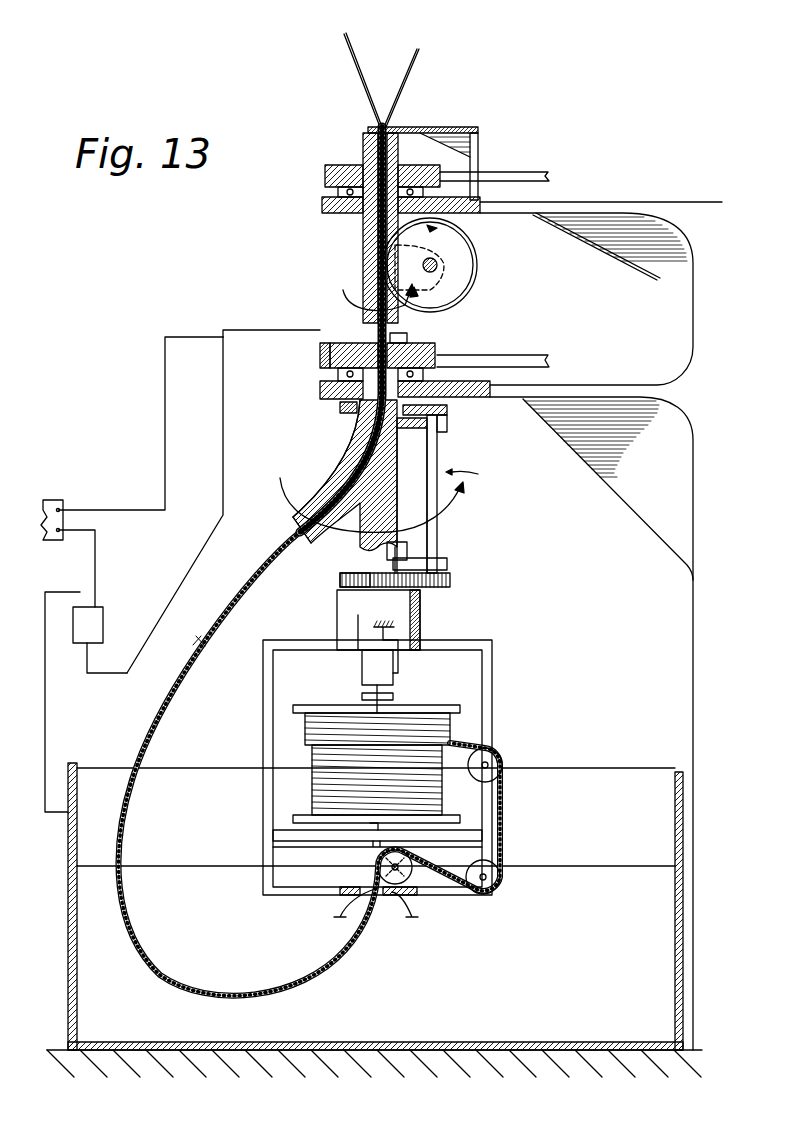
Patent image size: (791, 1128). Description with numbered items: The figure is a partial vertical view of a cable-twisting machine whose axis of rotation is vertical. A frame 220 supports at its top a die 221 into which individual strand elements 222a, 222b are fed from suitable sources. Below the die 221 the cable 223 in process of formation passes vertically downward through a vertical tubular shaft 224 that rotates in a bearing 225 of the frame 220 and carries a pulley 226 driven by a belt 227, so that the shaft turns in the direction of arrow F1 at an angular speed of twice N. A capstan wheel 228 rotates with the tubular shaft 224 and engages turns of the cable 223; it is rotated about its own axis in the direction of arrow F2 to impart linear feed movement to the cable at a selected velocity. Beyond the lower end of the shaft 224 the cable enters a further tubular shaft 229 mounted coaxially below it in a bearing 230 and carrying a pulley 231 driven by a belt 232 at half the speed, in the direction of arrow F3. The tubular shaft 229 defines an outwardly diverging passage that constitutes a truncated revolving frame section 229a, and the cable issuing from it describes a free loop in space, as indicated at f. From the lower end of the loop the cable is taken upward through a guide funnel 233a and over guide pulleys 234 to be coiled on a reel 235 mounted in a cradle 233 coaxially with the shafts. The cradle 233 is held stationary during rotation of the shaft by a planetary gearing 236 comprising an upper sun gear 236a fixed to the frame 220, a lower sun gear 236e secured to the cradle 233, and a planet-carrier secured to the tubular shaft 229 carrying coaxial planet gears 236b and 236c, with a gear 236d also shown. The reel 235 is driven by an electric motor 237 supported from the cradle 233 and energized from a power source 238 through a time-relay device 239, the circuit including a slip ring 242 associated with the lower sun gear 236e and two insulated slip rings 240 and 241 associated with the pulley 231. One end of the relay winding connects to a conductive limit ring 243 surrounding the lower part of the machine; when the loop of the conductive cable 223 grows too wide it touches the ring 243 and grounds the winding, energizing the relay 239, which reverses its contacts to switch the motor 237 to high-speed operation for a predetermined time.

The frame 220 is at (693, 350).
The die 221 is at (400, 131).
The strand element 222a is at (363, 22).
The strand element 222b is at (418, 50).
The cable 223 is at (366, 226).
The vertical tubular shaft 224 is at (369, 262).
The bearing 225 is at (340, 191).
The pulley 226 is at (355, 156).
The belt 227 is at (532, 172).
The capstan wheel 228 is at (457, 253).
The tubular shaft 229 is at (360, 432).
The revolving frame section 229a is at (327, 478).
The bearing 230 is at (340, 384).
The pulley 231 is at (338, 374).
The belt 232 is at (540, 357).
The cradle 233 is at (443, 893).
The guide funnel 233a is at (405, 918).
The guide pulleys 234 is at (486, 877).
The reel 235 is at (440, 707).
The planetary gearing 236 is at (457, 494).
The upper sun gear 236a is at (340, 409).
The planet gear 236b is at (447, 410).
The planet gear 236c is at (437, 540).
The gear 236d is at (452, 581).
The lower sun gear 236e is at (340, 580).
The electric motor 237 is at (362, 670).
The power source 238 is at (60, 506).
The time-relay device 239 is at (97, 618).
The slip ring 240 is at (340, 343).
The slip ring 241 is at (415, 345).
The slip ring 242 is at (341, 568).
The conductive limit ring 243 is at (70, 785).
The direction of rotation of upper shaft F1 is at (366, 293).
The direction of rotation of capstan wheel F2 is at (425, 238).
The direction of rotation of lower shaft F3 is at (386, 505).
The force f is at (202, 647).